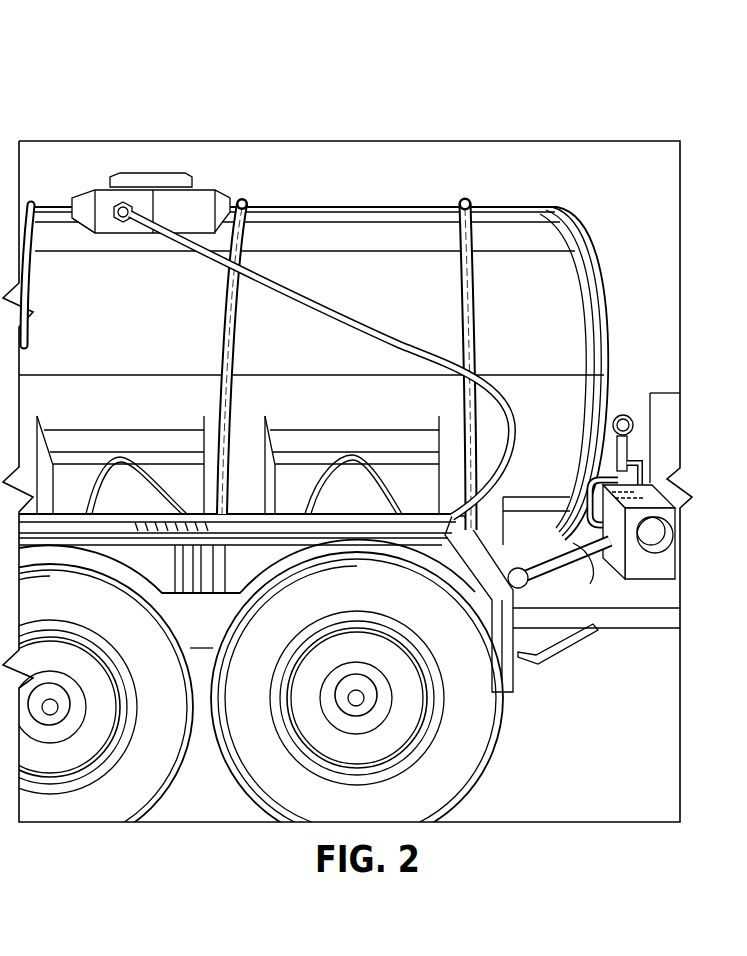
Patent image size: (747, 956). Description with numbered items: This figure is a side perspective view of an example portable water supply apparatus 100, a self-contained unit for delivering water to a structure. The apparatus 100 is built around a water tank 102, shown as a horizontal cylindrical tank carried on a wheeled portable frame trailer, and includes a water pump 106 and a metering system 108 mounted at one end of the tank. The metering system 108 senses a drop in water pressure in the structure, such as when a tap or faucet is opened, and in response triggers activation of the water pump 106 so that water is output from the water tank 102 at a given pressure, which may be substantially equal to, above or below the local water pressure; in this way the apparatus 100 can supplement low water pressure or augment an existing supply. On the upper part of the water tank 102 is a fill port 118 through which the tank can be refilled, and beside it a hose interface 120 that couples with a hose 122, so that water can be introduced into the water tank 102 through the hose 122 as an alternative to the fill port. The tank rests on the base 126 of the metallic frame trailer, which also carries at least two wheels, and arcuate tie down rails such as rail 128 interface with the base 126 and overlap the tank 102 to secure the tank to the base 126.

The portable water supply apparatus 100 is at (118, 129).
The water tank 102 is at (313, 372).
The water pump 106 is at (608, 490).
The metering system 108 is at (618, 414).
The fill port 118 is at (200, 179).
The hose interface 120 is at (121, 222).
The hose 122 is at (312, 302).
The base 126 is at (563, 549).
The tie down rail 128 is at (478, 207).